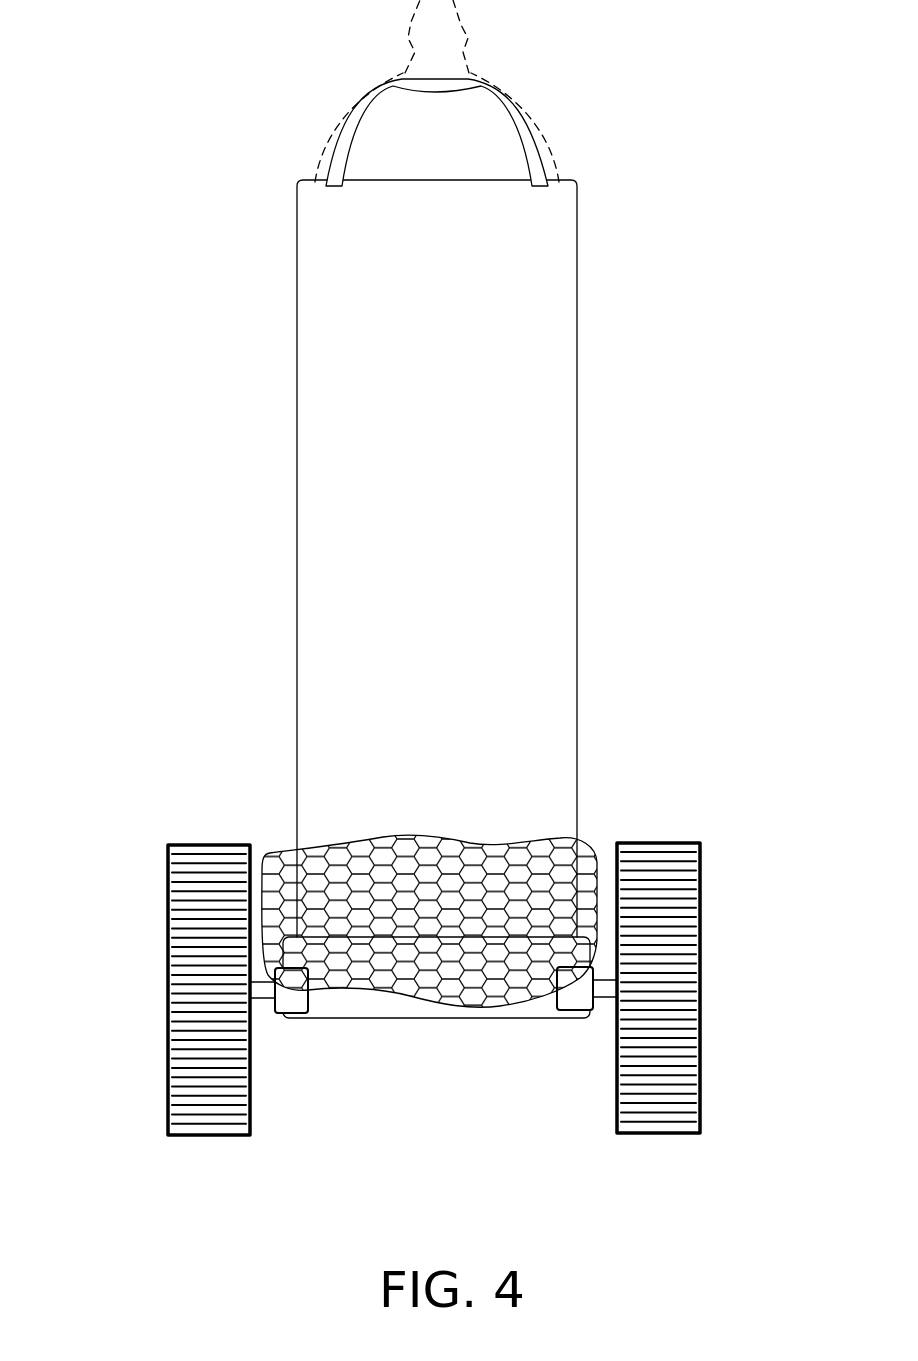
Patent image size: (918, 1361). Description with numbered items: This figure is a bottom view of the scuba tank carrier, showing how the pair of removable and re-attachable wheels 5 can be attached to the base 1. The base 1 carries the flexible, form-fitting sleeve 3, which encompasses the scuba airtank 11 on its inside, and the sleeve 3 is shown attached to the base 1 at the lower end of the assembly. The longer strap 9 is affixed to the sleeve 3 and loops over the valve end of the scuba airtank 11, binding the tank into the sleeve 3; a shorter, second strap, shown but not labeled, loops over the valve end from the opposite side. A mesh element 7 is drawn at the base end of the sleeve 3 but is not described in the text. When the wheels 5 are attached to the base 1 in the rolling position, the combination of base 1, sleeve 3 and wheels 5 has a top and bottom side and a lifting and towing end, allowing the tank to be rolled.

The base 1 is at (387, 1022).
The flexible, form-fitting sleeve 3 is at (297, 345).
The pair of removable and re-attachable wheels 5 is at (155, 953).
The net 7 is at (283, 857).
The longer strap 9 is at (433, 103).
The scuba airtank 11 is at (318, 135).